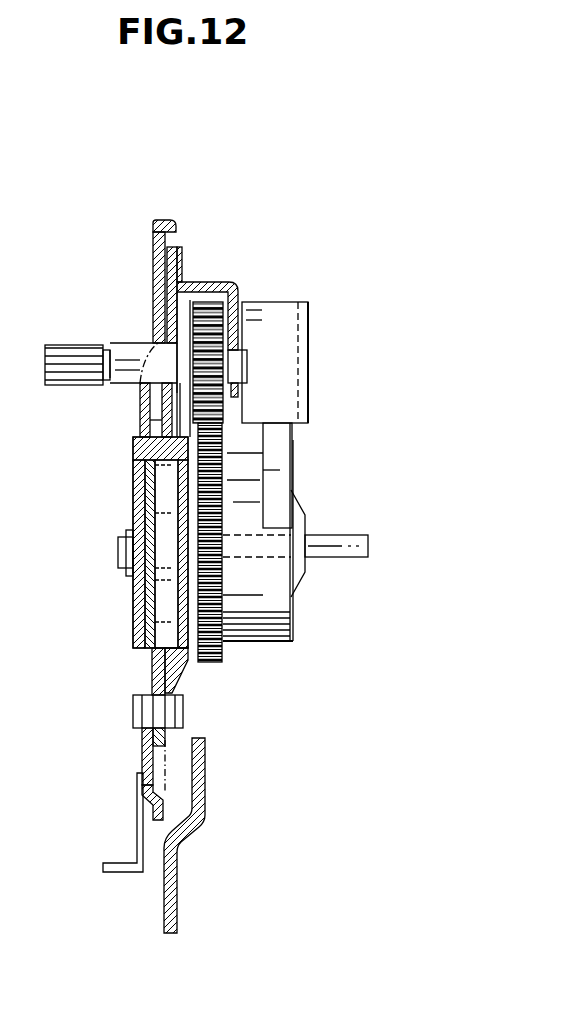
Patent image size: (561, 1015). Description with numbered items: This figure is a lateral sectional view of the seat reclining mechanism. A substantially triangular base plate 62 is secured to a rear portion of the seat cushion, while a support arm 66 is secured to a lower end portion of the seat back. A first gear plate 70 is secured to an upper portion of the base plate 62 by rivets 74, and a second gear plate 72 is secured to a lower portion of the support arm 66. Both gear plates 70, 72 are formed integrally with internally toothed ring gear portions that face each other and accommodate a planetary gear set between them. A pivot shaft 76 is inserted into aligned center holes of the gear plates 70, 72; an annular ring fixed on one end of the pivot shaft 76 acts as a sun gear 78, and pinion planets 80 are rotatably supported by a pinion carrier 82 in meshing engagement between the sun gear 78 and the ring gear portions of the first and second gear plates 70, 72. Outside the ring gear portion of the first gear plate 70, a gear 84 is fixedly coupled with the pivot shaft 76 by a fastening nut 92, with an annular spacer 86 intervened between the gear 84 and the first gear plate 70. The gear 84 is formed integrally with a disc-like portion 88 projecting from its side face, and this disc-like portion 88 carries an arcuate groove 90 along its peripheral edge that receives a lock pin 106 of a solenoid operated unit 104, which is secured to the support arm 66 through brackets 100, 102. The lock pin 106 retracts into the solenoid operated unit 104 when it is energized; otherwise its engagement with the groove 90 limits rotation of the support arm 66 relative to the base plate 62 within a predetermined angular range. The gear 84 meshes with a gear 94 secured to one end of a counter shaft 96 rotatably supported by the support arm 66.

The base plate 62 is at (145, 740).
The support arm 66 is at (163, 226).
The first gear plate 70 is at (185, 648).
The second gear plate 72 is at (140, 448).
The rivets 74 is at (180, 712).
The pivot shaft 76 is at (140, 543).
The sun gear 78 is at (158, 542).
The pinion planets 80 is at (168, 477).
The pinion carrier 82 is at (165, 605).
The gear 84 is at (222, 562).
The annular spacer 86 is at (223, 563).
The disc-like portion 88 is at (248, 642).
The arcuate groove 90 is at (300, 510).
The fastening nut 92 is at (305, 575).
The gear 94 is at (212, 303).
The counter shaft 96 is at (78, 343).
The bracket 100 is at (247, 283).
The bracket 102 is at (283, 367).
The solenoid operated unit 104 is at (310, 317).
The lock pin 106 is at (280, 445).